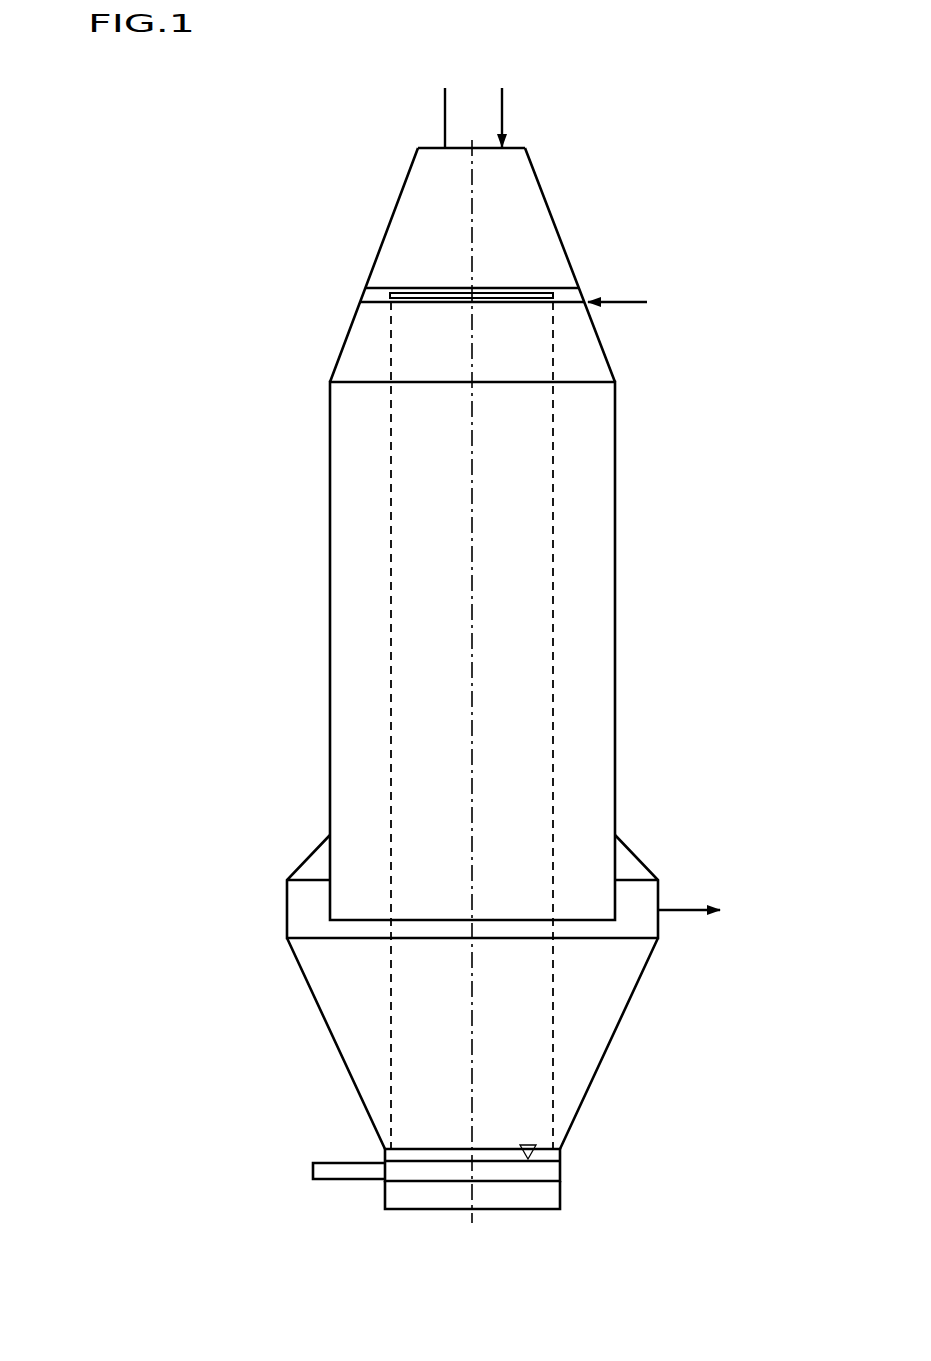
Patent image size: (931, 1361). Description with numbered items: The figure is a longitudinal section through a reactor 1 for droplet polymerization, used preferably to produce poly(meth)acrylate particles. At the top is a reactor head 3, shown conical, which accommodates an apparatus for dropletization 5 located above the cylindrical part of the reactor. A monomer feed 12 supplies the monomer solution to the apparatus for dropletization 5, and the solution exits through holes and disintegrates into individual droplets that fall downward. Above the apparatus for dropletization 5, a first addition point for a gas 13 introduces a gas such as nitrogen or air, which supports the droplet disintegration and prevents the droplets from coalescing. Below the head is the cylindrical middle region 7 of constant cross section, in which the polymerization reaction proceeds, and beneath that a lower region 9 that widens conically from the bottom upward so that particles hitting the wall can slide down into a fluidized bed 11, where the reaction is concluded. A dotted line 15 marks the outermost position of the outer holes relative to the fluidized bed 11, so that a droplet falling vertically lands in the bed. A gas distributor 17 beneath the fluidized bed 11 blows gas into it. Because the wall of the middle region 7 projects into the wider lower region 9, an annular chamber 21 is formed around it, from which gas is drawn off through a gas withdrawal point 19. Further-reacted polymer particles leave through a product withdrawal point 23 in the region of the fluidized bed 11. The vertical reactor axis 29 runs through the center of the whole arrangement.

The reactor 1 is at (258, 380).
The reactor head 3 is at (553, 213).
The apparatus for dropletization 5 is at (426, 293).
The middle region 7 is at (615, 600).
The lower region 9 is at (615, 1032).
The fluidized bed 11 is at (550, 1170).
The monomer feed 12 is at (628, 300).
The first addition point for a gas 13 is at (503, 113).
The dotted line 15 is at (390, 451).
The gas distributor 17 is at (518, 1198).
The gas withdrawal point 19 is at (690, 907).
The annular chamber 21 is at (298, 909).
The product withdrawal point 23 is at (318, 1170).
The reactor axis 29 is at (472, 723).